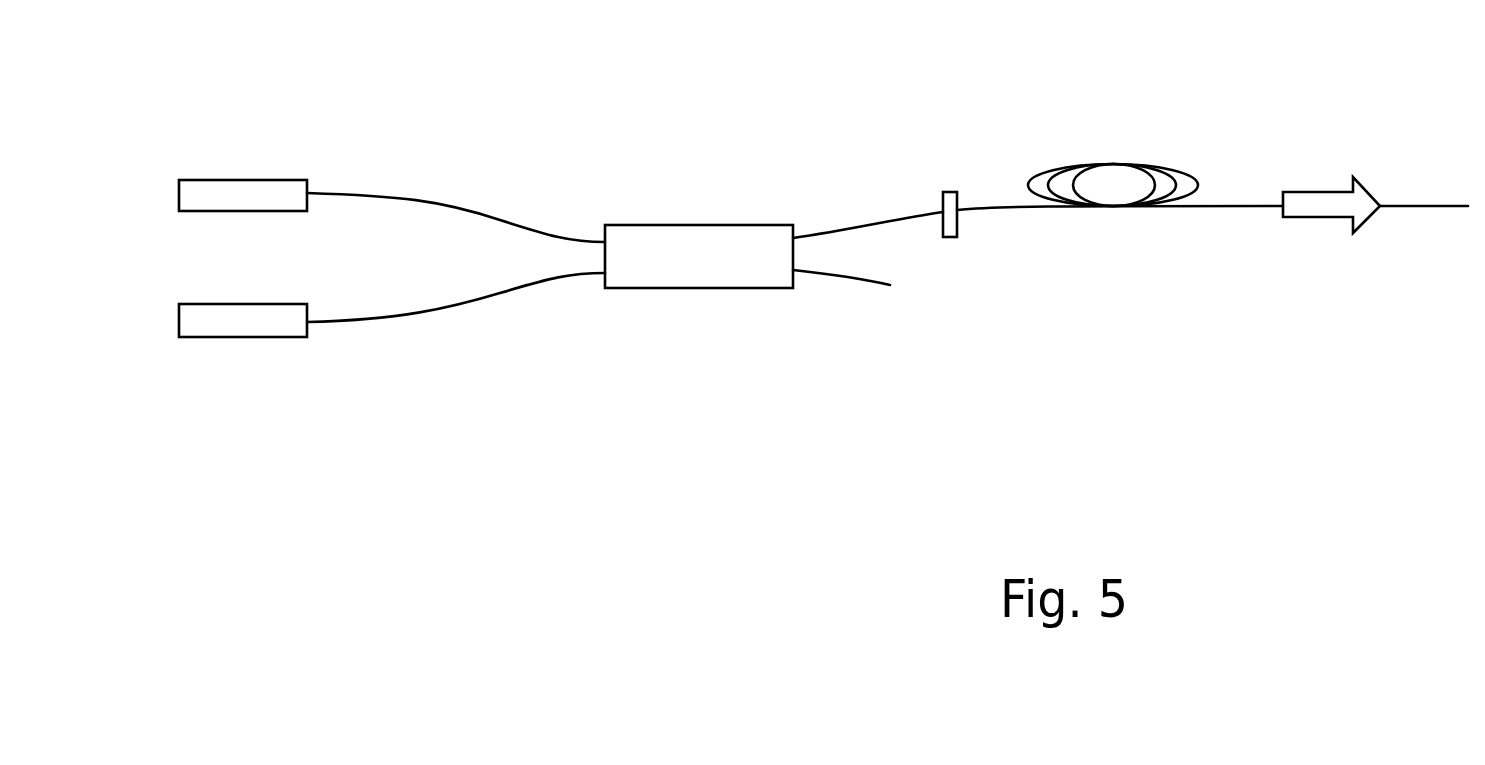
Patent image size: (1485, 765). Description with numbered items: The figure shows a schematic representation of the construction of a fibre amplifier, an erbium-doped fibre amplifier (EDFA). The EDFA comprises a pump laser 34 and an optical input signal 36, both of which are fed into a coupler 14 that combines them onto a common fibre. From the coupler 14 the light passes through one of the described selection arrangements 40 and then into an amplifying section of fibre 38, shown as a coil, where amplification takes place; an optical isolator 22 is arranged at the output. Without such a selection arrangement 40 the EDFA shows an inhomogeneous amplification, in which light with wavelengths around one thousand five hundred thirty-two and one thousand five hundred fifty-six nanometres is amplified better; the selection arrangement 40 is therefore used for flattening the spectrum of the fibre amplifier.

The optical input signal 36 is at (254, 178).
The pump laser 34 is at (263, 338).
The coupler 14 is at (707, 224).
The selection arrangement 40 is at (950, 190).
The amplifying section of fibre 38 is at (1142, 222).
The optical isolator 22 is at (1330, 190).